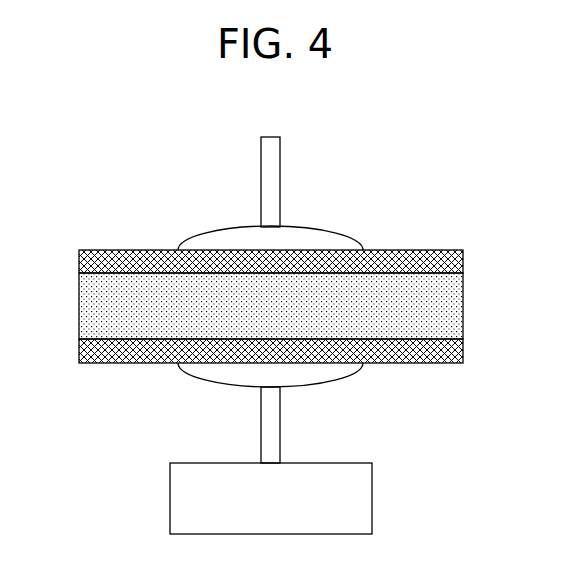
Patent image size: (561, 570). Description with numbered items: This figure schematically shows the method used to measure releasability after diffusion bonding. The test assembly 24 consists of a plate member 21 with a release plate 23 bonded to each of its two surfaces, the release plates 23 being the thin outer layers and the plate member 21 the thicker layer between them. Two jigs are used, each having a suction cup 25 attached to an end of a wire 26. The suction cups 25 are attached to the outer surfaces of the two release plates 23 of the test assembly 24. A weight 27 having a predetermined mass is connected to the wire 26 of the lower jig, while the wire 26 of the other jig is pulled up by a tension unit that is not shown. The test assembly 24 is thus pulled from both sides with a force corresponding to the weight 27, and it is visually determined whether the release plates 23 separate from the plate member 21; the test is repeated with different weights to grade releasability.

The plate member 21 is at (452, 305).
The release plate 23 is at (453, 257).
The test assembly 24 is at (270, 308).
The suction cup 25 is at (340, 240).
The wire 26 is at (261, 174).
The weight 27 is at (362, 497).